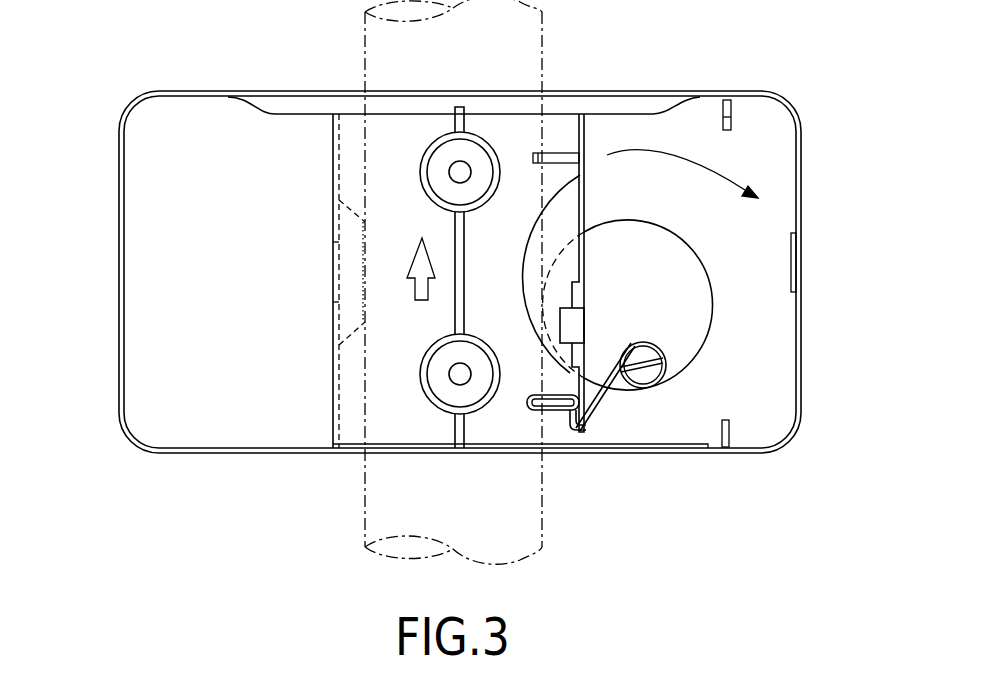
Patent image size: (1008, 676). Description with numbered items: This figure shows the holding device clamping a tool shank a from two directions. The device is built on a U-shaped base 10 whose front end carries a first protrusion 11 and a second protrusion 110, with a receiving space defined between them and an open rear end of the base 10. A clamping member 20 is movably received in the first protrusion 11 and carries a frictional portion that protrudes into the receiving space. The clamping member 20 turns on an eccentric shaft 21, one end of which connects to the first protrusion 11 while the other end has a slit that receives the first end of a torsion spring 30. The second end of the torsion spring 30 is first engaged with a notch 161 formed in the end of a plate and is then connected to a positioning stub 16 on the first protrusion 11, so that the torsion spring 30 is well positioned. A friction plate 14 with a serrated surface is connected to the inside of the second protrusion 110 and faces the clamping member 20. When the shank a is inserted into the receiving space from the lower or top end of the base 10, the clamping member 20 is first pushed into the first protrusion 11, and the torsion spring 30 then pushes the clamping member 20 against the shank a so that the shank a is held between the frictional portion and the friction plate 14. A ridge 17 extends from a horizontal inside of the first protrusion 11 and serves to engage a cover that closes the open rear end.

The U-shaped base 10 is at (125, 98).
The second protrusion 110 is at (153, 282).
The first protrusion 11 is at (765, 355).
The friction plate 14 is at (352, 233).
The positioning stub 16 is at (553, 405).
The notch 161 is at (583, 447).
The ridge 17 is at (796, 270).
The clamping member 20 is at (718, 316).
The eccentric shaft 21 is at (645, 377).
The torsion spring 30 is at (615, 406).
The shank a is at (500, 43).